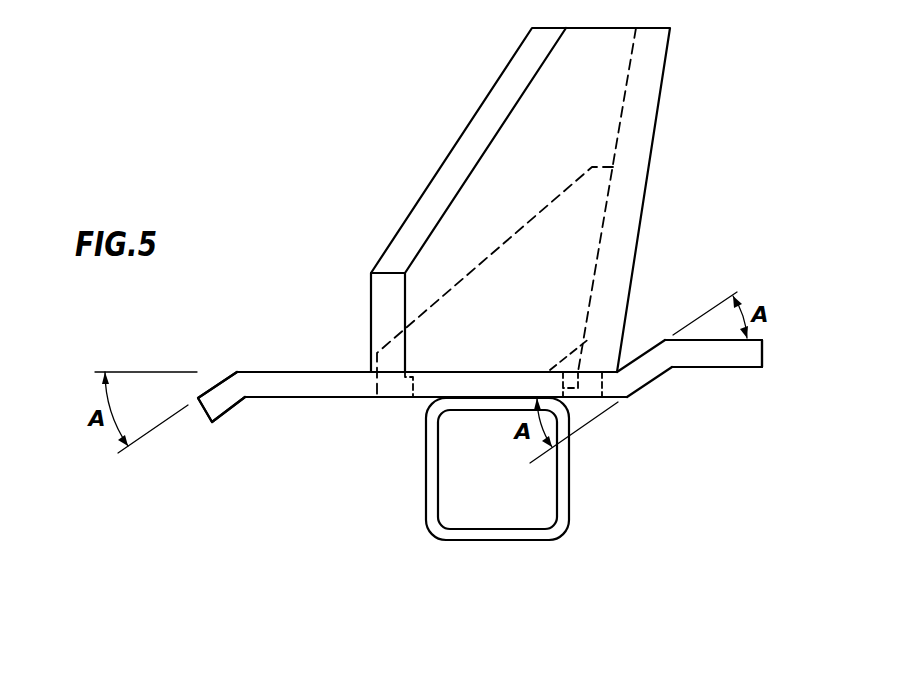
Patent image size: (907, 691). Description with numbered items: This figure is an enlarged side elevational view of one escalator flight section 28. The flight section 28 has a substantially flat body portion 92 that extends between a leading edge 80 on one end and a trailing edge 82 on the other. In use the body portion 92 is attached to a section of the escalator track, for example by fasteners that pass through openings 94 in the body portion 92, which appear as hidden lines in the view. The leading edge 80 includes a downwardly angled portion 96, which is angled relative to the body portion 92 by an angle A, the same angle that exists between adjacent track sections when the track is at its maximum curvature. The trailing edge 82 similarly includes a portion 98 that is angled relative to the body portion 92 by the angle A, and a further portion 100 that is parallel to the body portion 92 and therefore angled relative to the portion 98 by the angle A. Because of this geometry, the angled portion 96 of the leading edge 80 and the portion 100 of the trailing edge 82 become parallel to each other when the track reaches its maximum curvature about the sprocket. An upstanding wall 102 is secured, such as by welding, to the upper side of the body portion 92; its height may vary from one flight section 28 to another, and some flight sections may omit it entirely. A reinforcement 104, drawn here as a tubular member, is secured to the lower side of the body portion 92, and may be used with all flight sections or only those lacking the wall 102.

The flight section 28 is at (812, 62).
The leading edge 80 is at (216, 383).
The trailing edge 82 is at (760, 338).
The body portion 92 is at (343, 370).
The openings 94 is at (406, 386).
The downwardly angled portion 96 is at (217, 413).
The angled portion 98 is at (650, 383).
The parallel portion 100 is at (742, 367).
The upstanding wall 102 is at (657, 122).
The reinforcement 104 is at (570, 503).